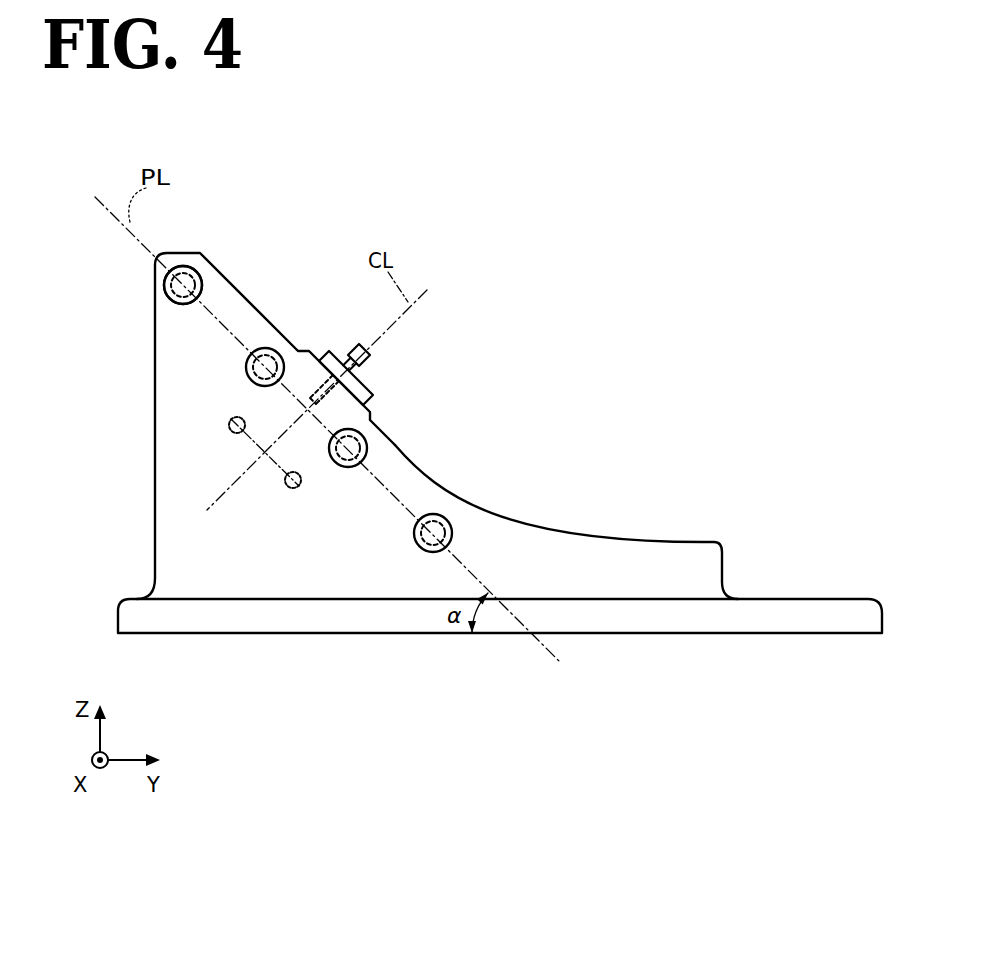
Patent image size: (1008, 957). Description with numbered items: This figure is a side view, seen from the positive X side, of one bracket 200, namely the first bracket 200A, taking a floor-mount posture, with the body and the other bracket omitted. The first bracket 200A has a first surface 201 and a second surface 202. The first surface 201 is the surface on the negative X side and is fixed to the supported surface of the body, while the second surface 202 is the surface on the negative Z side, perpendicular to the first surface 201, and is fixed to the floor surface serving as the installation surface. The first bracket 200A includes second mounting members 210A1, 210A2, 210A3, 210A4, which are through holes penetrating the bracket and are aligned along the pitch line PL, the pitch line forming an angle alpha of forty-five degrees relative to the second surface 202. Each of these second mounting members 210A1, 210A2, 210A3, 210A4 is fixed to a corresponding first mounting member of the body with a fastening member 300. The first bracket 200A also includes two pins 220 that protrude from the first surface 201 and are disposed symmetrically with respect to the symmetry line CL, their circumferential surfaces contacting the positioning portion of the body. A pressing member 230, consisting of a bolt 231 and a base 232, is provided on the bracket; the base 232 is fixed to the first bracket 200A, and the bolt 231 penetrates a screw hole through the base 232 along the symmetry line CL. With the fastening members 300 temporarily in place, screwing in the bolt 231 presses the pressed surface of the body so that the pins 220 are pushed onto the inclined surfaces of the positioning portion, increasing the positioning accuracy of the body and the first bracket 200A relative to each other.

The bracket 200 is at (500, 451).
The first bracket 200A is at (500, 451).
The first surface 201 is at (523, 542).
The second surface 202 is at (810, 632).
The second mounting member 210A1 is at (200, 270).
The second mounting member 210A2 is at (278, 353).
The second mounting member 210A3 is at (368, 452).
The second mounting member 210A4 is at (444, 519).
The pin 220 is at (233, 433).
The pressing member 230 is at (417, 368).
The bolt 231 is at (371, 356).
The base 232 is at (369, 384).
The fastening member 300 is at (165, 285).